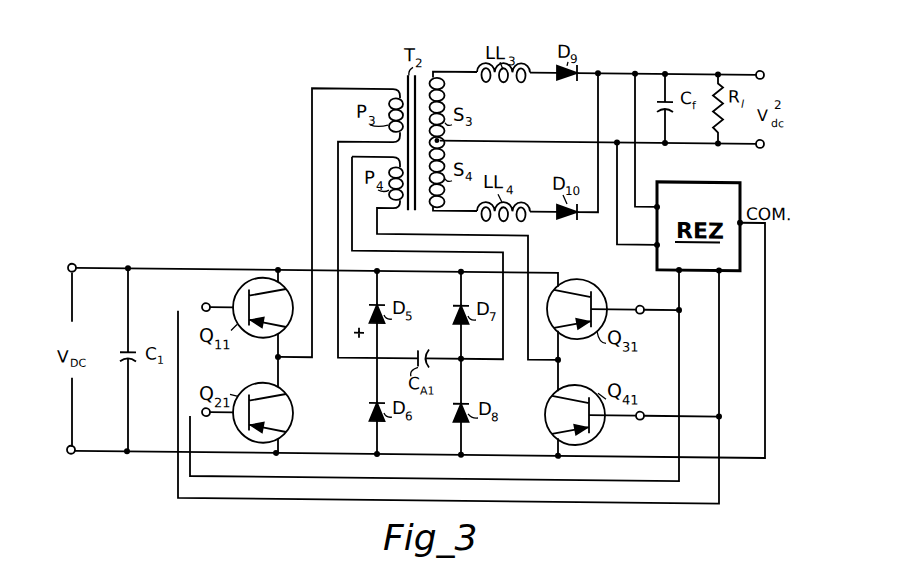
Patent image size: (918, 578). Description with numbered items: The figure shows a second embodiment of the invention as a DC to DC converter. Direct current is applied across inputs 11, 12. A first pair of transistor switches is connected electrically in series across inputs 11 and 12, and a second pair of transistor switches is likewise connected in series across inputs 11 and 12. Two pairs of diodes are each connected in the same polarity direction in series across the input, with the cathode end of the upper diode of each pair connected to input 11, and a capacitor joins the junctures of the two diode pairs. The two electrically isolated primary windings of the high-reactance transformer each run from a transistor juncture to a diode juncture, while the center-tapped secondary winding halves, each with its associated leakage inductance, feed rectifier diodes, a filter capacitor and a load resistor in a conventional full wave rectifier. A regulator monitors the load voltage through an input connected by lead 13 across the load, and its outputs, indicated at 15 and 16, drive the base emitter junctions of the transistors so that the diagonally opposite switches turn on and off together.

The input 11 is at (77, 264).
The input 12 is at (72, 453).
The lead 13 is at (635, 171).
The regulator drive lead to transistors Q2 and Q4 15 is at (722, 296).
The regulator drive lead to transistors Q1 and Q3 16 is at (679, 299).